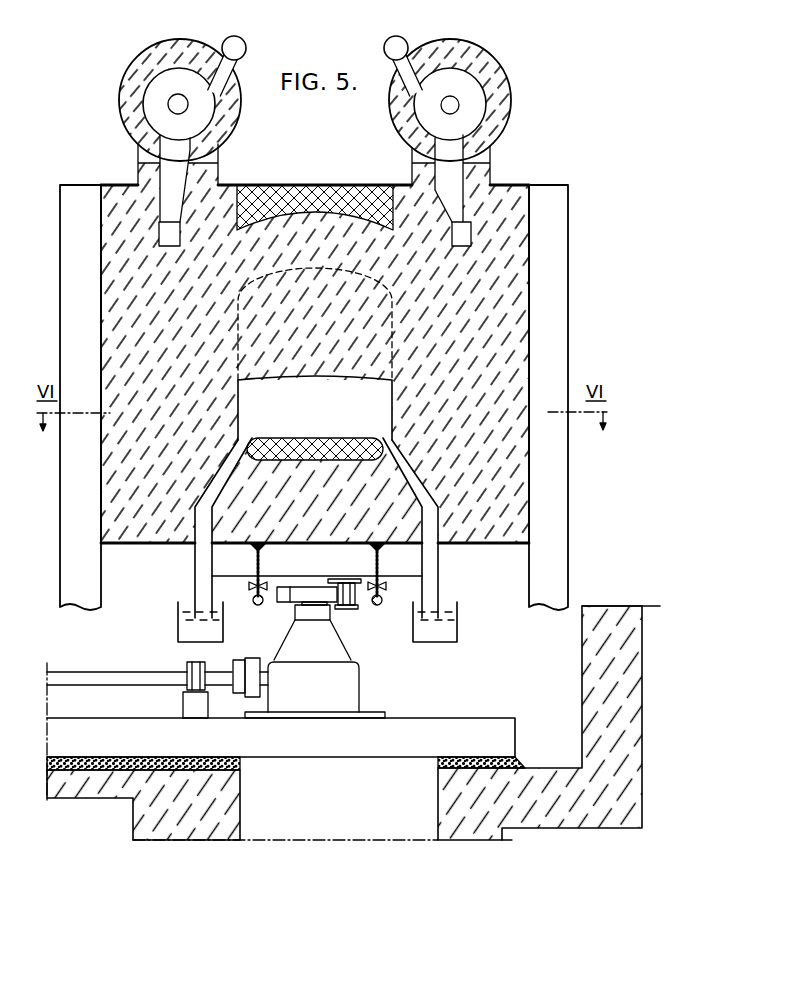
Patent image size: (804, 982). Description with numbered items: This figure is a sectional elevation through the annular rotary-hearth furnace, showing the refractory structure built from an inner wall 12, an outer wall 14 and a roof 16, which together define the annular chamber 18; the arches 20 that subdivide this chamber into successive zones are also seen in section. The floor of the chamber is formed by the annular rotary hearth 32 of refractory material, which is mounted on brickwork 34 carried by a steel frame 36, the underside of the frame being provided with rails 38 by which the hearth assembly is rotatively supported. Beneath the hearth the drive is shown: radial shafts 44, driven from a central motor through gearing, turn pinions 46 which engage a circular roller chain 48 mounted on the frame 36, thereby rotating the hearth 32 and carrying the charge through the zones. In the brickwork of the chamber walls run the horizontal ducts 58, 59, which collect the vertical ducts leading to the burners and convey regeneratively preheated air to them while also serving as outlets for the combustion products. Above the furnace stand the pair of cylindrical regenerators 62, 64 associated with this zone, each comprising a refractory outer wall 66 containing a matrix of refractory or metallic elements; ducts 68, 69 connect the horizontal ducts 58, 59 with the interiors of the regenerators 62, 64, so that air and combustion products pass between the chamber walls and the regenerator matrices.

The inner wall 12 is at (113, 440).
The outer wall 14 is at (508, 352).
The roof 16 is at (281, 243).
The annular chamber 18 is at (326, 421).
The arches 20 is at (315, 340).
The annular rotary hearth 32 is at (334, 447).
The brickwork 34 is at (326, 521).
The steel frame 36 is at (330, 572).
The rails 38 is at (255, 607).
The radial shafts 44 is at (140, 678).
The pinions 46 is at (315, 595).
The circular roller chain 48 is at (347, 608).
The horizontal duct 58 is at (466, 238).
The horizontal duct 59 is at (165, 236).
The regenerator 62 is at (462, 93).
The regenerator 64 is at (192, 93).
The refractory outer wall 66 is at (226, 127).
The duct 68 is at (452, 150).
The duct 69 is at (178, 157).